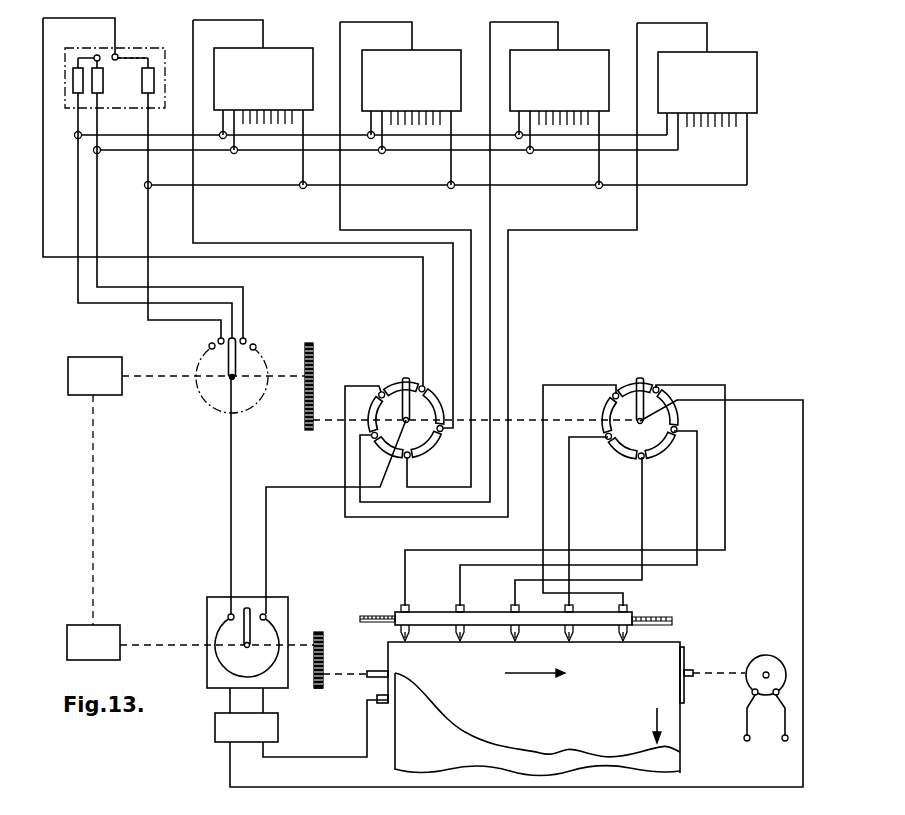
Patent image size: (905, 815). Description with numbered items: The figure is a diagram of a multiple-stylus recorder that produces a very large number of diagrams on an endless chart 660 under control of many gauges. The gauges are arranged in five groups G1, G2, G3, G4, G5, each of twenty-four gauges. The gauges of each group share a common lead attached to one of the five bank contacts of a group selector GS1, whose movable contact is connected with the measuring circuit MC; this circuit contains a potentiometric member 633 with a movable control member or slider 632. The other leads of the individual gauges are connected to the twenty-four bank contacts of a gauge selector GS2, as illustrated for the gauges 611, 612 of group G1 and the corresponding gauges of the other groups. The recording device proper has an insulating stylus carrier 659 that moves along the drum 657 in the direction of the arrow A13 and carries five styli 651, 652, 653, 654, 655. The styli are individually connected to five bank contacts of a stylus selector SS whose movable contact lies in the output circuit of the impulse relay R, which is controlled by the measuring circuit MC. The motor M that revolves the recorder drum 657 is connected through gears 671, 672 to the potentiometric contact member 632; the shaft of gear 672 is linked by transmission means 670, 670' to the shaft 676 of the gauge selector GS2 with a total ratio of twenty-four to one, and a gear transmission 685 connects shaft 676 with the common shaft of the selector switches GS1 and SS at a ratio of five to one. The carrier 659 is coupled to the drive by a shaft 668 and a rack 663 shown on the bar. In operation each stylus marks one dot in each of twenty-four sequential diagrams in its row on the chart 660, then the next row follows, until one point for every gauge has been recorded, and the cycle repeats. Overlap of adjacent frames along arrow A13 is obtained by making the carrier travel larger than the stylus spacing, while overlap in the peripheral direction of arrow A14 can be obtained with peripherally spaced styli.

The gauge group G1 is at (159, 48).
The gauge group G2 is at (304, 50).
The gauge group G3 is at (452, 52).
The gauge group G4 is at (599, 52).
The gauge group G5 is at (751, 54).
The gauge 611 is at (78, 92).
The gauge 612 is at (113, 55).
The gauge selector GS2 is at (287, 351).
The group selector GS1 is at (393, 372).
The stylus selector SS is at (673, 379).
The measuring circuit MC is at (308, 589).
The movable control member or slider 632 is at (271, 667).
The potentiometric member 633 is at (258, 591).
The transmission means 670 is at (105, 627).
The transmission means 670' is at (95, 479).
The shaft 676 is at (178, 376).
The gear transmission 685 is at (452, 386).
The impulse relay R is at (278, 730).
The gear 672 is at (331, 630).
The gear 671 is at (316, 690).
The shaft 668 is at (371, 670).
The insulating stylus carrier 659 is at (645, 611).
The rack 663 is at (672, 622).
The stylus 651 is at (408, 643).
The stylus 652 is at (463, 643).
The stylus 653 is at (518, 643).
The stylus 654 is at (572, 643).
The stylus 655 is at (627, 643).
The endless chart 660 is at (672, 752).
The recorder drum 657 is at (684, 688).
The motor M is at (780, 668).
The arrow A13 is at (547, 677).
The arrow A14 is at (654, 723).